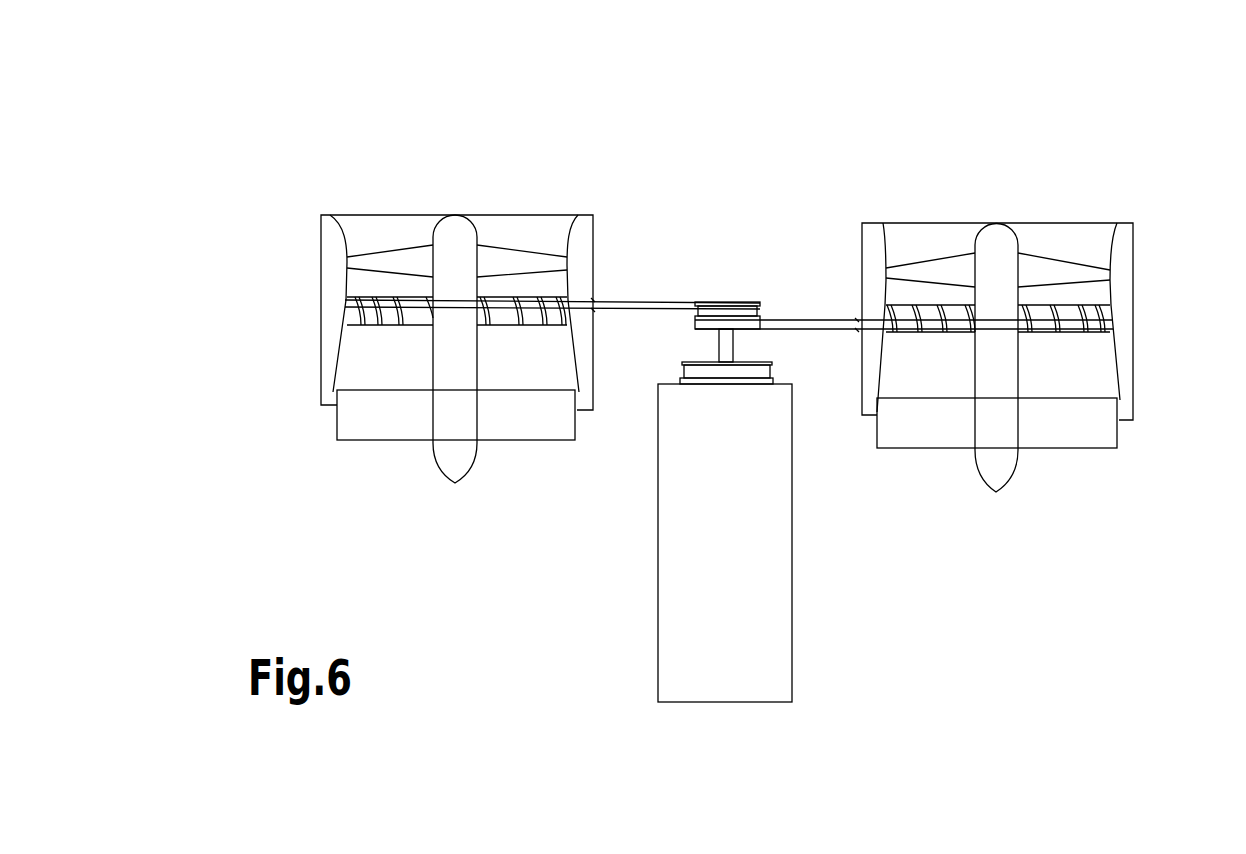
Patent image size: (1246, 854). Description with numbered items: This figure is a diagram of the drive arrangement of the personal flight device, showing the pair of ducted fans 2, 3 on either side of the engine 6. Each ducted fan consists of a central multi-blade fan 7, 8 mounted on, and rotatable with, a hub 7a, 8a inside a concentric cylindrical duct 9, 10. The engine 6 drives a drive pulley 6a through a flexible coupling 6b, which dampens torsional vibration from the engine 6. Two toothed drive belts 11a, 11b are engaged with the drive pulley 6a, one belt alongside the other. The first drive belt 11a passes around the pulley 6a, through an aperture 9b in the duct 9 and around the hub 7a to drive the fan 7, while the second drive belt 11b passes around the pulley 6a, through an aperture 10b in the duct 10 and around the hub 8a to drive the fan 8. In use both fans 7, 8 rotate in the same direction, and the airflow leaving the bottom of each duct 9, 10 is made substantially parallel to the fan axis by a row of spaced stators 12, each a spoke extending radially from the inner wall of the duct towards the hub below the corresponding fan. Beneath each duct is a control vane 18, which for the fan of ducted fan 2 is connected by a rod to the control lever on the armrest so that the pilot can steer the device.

The ducted fan 2 is at (457, 265).
The ducted fan 3 is at (997, 270).
The engine 6 is at (725, 543).
The drive pulley 6a is at (733, 298).
The flexible coupling 6b is at (733, 378).
The multi-blade fan 7 is at (373, 255).
The hub 7a is at (454, 349).
The multi-blade fan 8 is at (1073, 268).
The hub 8a is at (995, 358).
The duct 9 is at (568, 228).
The aperture 9b is at (593, 300).
The duct 10 is at (890, 238).
The aperture 10b is at (857, 320).
The first drive belt 11a is at (593, 310).
The second drive belt 11b is at (857, 333).
The stators 12 is at (350, 307).
The control vane 18 is at (403, 424).